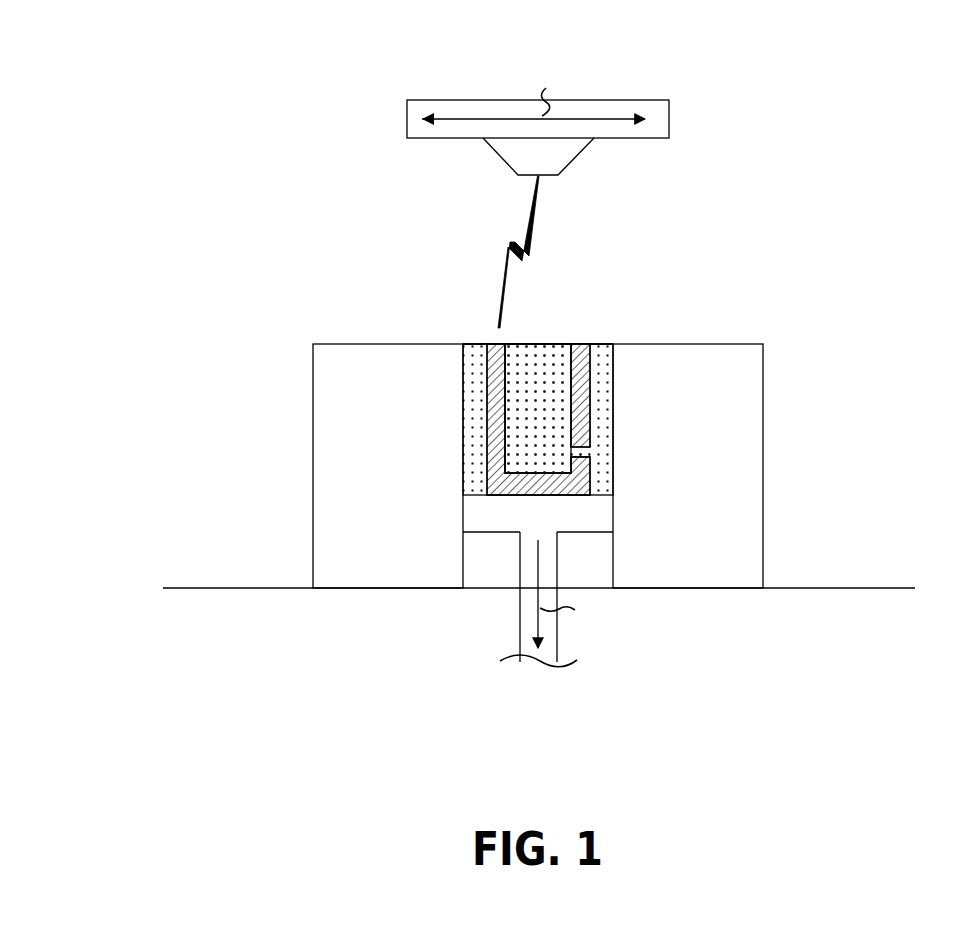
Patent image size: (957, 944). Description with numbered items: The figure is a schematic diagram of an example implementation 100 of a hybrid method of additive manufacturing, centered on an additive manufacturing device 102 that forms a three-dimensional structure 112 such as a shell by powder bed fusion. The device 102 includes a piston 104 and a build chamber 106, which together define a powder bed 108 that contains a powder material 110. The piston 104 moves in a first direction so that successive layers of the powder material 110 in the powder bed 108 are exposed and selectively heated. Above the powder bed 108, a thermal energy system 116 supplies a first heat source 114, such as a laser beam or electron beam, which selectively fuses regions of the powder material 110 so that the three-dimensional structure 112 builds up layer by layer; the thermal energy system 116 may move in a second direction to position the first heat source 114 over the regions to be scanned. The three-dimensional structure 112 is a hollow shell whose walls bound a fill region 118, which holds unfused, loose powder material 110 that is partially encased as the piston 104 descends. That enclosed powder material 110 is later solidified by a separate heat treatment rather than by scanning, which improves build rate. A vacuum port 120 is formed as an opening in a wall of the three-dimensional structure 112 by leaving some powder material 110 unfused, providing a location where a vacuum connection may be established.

The implementation 100 is at (228, 52).
The additive manufacturing device 102 is at (305, 314).
The piston 104 is at (520, 630).
The build chamber 106 is at (313, 495).
The powder bed 108 is at (468, 400).
The powder material 110 is at (612, 345).
The three-dimensional structure 112 is at (581, 352).
The first heat source 114 is at (508, 255).
The thermal energy system 116 is at (642, 161).
The fill region 118 is at (528, 350).
The vacuum port 120 is at (597, 451).